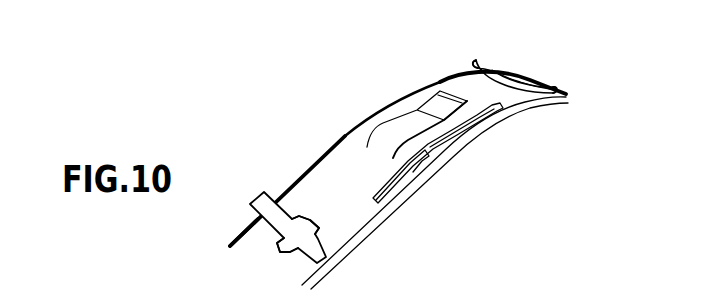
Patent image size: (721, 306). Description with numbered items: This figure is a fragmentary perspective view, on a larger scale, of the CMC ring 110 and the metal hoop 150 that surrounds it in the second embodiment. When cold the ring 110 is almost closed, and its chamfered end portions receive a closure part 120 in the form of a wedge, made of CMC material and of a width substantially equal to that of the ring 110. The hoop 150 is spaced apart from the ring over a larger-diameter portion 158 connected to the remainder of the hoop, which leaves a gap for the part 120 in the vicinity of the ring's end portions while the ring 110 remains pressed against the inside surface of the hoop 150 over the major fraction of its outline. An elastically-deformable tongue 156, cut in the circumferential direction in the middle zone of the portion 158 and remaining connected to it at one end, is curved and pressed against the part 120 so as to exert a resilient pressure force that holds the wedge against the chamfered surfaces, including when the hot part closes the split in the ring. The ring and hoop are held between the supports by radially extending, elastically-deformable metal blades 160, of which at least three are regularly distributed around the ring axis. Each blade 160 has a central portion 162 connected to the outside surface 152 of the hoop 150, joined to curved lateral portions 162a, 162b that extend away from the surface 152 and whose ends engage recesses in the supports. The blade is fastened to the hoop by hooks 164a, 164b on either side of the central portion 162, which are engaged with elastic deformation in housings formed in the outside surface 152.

The ring 110 is at (412, 191).
The closure part 120 is at (462, 142).
The hoop 150 is at (256, 240).
The outside surface 152 is at (342, 178).
The elastically-deformable tongue 156 is at (420, 120).
The larger-diameter portion 158 is at (397, 107).
The elastically-deformable metal blade 160 is at (504, 70).
The central portion 162 is at (295, 228).
The curved lateral portion 162a is at (481, 65).
The curved lateral portion 162b is at (556, 88).
The hook 164a is at (303, 218).
The hook 164b is at (278, 243).